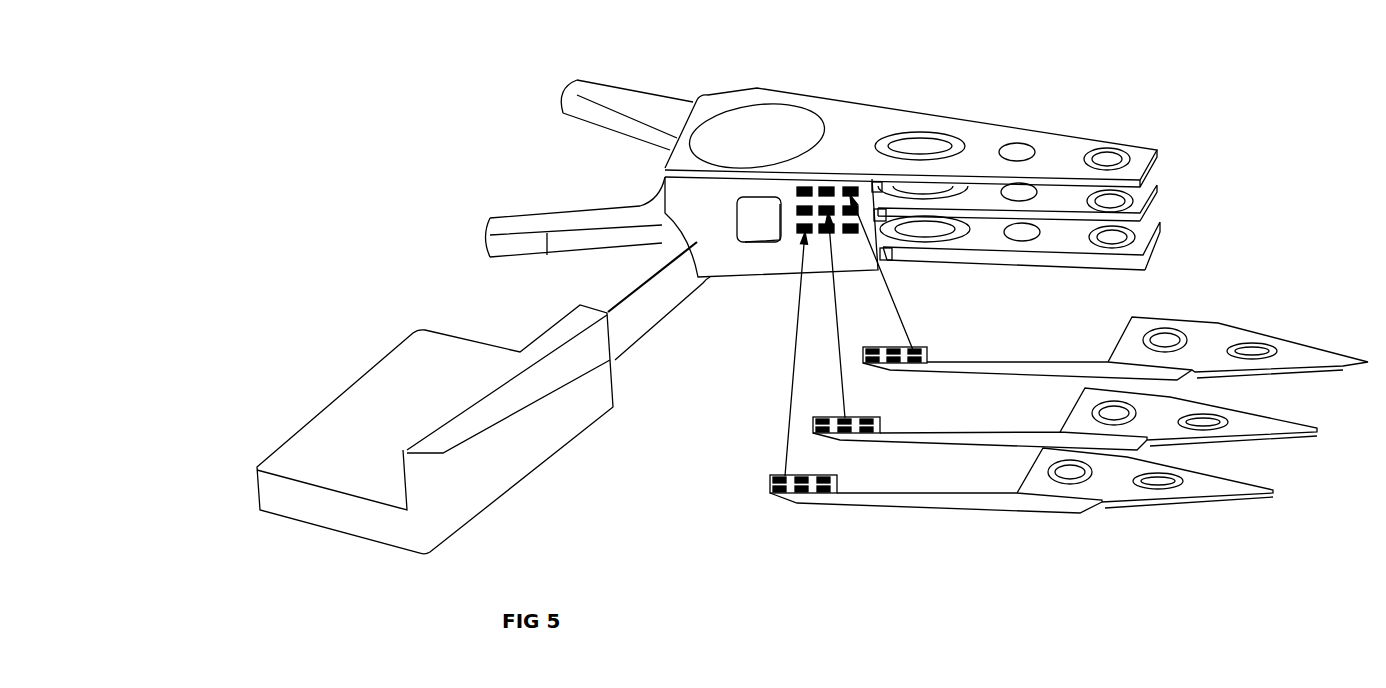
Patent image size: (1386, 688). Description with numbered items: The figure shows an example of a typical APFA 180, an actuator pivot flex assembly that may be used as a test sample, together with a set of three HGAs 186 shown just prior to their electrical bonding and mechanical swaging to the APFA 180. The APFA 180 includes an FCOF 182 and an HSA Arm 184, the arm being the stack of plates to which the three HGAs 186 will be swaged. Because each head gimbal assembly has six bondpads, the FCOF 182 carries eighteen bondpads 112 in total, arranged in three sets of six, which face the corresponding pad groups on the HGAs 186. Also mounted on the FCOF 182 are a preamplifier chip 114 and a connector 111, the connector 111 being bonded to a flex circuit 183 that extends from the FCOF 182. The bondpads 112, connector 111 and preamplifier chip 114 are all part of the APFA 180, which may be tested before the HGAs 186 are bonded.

The APFA 180 is at (438, 101).
The FCOF 182 is at (791, 195).
The flex circuit 183 is at (659, 311).
The HSA Arm 184 is at (1017, 154).
The HGAs 186 is at (1069, 364).
The connector 111 is at (435, 429).
The bondpads 112 is at (849, 257).
The preamplifier chip 114 is at (712, 352).